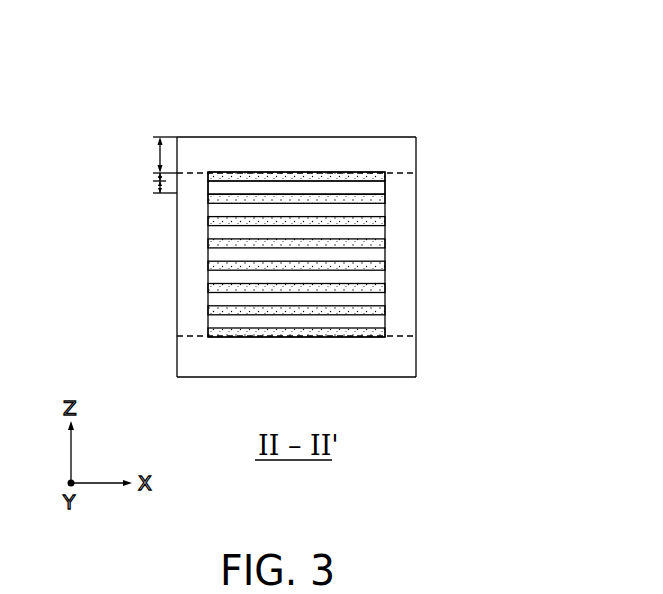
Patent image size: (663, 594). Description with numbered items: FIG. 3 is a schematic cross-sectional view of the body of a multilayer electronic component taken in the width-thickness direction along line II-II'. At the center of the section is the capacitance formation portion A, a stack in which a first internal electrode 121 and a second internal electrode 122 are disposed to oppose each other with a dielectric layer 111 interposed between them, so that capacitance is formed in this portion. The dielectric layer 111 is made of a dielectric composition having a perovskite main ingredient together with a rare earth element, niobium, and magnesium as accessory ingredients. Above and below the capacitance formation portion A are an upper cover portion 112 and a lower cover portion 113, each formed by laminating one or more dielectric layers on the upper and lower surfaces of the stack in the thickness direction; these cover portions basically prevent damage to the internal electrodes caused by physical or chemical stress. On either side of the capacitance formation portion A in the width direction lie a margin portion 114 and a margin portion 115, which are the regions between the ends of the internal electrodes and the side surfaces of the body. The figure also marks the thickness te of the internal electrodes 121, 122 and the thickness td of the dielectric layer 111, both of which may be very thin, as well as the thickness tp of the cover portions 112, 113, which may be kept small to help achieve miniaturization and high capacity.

The upper cover portion 112 is at (302, 152).
The margin portion 114 is at (192, 290).
The margin portion 115 is at (411, 277).
The lower cover portion 113 is at (411, 352).
The capacitance formation portion A is at (203, 257).
The first internal electrode 121 is at (386, 173).
The dielectric layer 111 is at (381, 187).
The second internal electrode 122 is at (385, 197).
The thickness of cover portion tp is at (155, 155).
The thickness of internal electrode te is at (153, 177).
The thickness of dielectric layer td is at (153, 189).